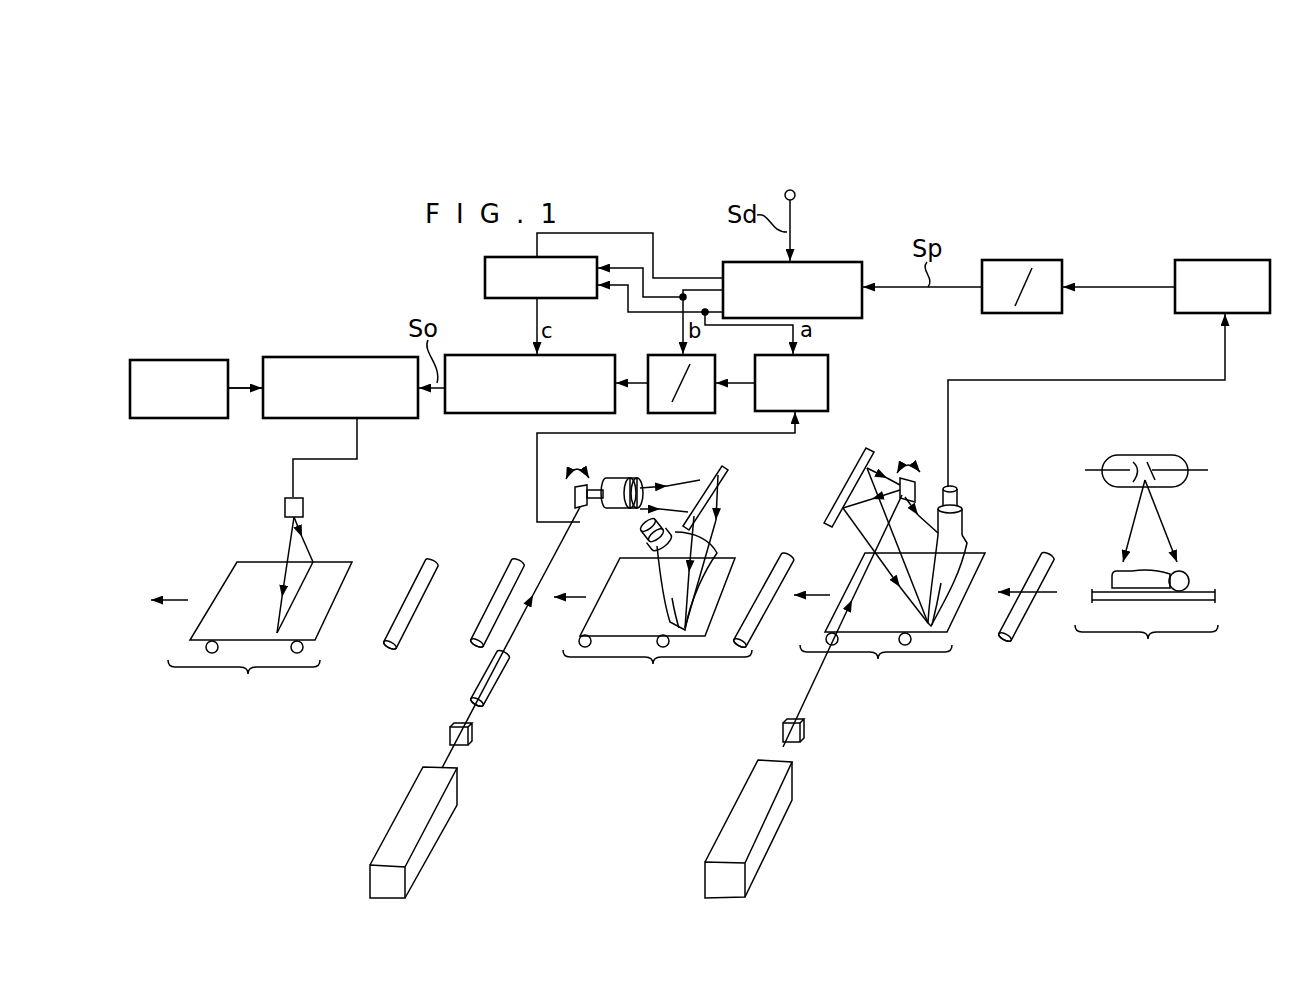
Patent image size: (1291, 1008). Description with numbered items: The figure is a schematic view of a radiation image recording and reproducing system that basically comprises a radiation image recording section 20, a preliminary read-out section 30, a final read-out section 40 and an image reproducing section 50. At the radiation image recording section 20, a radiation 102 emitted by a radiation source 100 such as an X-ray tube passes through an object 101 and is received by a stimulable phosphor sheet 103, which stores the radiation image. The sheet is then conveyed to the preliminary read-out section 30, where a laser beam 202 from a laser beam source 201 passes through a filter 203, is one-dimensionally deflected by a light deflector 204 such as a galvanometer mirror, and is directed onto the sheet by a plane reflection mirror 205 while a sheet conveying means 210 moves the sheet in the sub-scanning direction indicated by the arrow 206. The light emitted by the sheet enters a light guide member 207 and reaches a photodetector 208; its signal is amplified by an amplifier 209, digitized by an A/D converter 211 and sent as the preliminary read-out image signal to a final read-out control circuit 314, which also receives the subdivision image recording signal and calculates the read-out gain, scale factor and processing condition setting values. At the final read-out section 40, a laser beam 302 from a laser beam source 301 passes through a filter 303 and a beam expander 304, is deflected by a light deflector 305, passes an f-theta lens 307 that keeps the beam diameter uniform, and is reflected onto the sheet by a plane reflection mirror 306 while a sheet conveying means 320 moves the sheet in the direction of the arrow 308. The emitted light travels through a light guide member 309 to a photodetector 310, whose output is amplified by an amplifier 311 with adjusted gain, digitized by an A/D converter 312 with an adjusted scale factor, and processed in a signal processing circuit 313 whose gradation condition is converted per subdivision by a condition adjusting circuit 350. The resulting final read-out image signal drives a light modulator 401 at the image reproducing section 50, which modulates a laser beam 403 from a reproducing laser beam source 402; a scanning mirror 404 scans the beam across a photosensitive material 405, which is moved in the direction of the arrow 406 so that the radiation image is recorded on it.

The radiation source 100 is at (1176, 455).
The object 101 is at (1113, 573).
The radiation 102 is at (1131, 523).
The stimulable phosphor sheet 103 is at (727, 570).
The radiation image recording section 20 is at (1146, 646).
The laser beam source 201 is at (784, 813).
The laser beam 202 is at (788, 750).
The filter 203 is at (802, 730).
The light deflector 204 is at (918, 480).
The plane reflection mirror 205 is at (855, 470).
The arrow 206 is at (817, 595).
The light guide member 207 is at (952, 553).
The photodetector 208 is at (960, 510).
The amplifier 209 is at (1219, 260).
The sheet conveying means 210 is at (908, 645).
The A/D converter 211 is at (1025, 260).
The preliminary read-out section 30 is at (876, 669).
The laser beam source 301 is at (444, 818).
The laser beam 302 is at (453, 757).
The filter 303 is at (470, 730).
The beam expander 304 is at (495, 673).
The light deflector 305 is at (593, 487).
The plane reflection mirror 306 is at (726, 474).
The f-theta lens 307 is at (641, 478).
The arrow 308 is at (576, 597).
The light guide member 309 is at (700, 558).
The photodetector 310 is at (650, 540).
The amplifier 311 is at (829, 370).
The A/D converter 312 is at (655, 354).
The signal processing circuit 313 is at (490, 354).
The final read-out control circuit 314 is at (829, 262).
The sheet conveying means 320 is at (668, 646).
The final read-out section 40 is at (657, 673).
The condition adjusting circuit 350 is at (484, 280).
The light modulator 401 is at (363, 356).
The reproducing laser beam source 402 is at (218, 358).
The laser beam 403 is at (240, 390).
The scanning mirror 404 is at (304, 510).
The photosensitive material 405 is at (252, 576).
The arrow 406 is at (178, 598).
The image reproducing section 50 is at (346, 631).